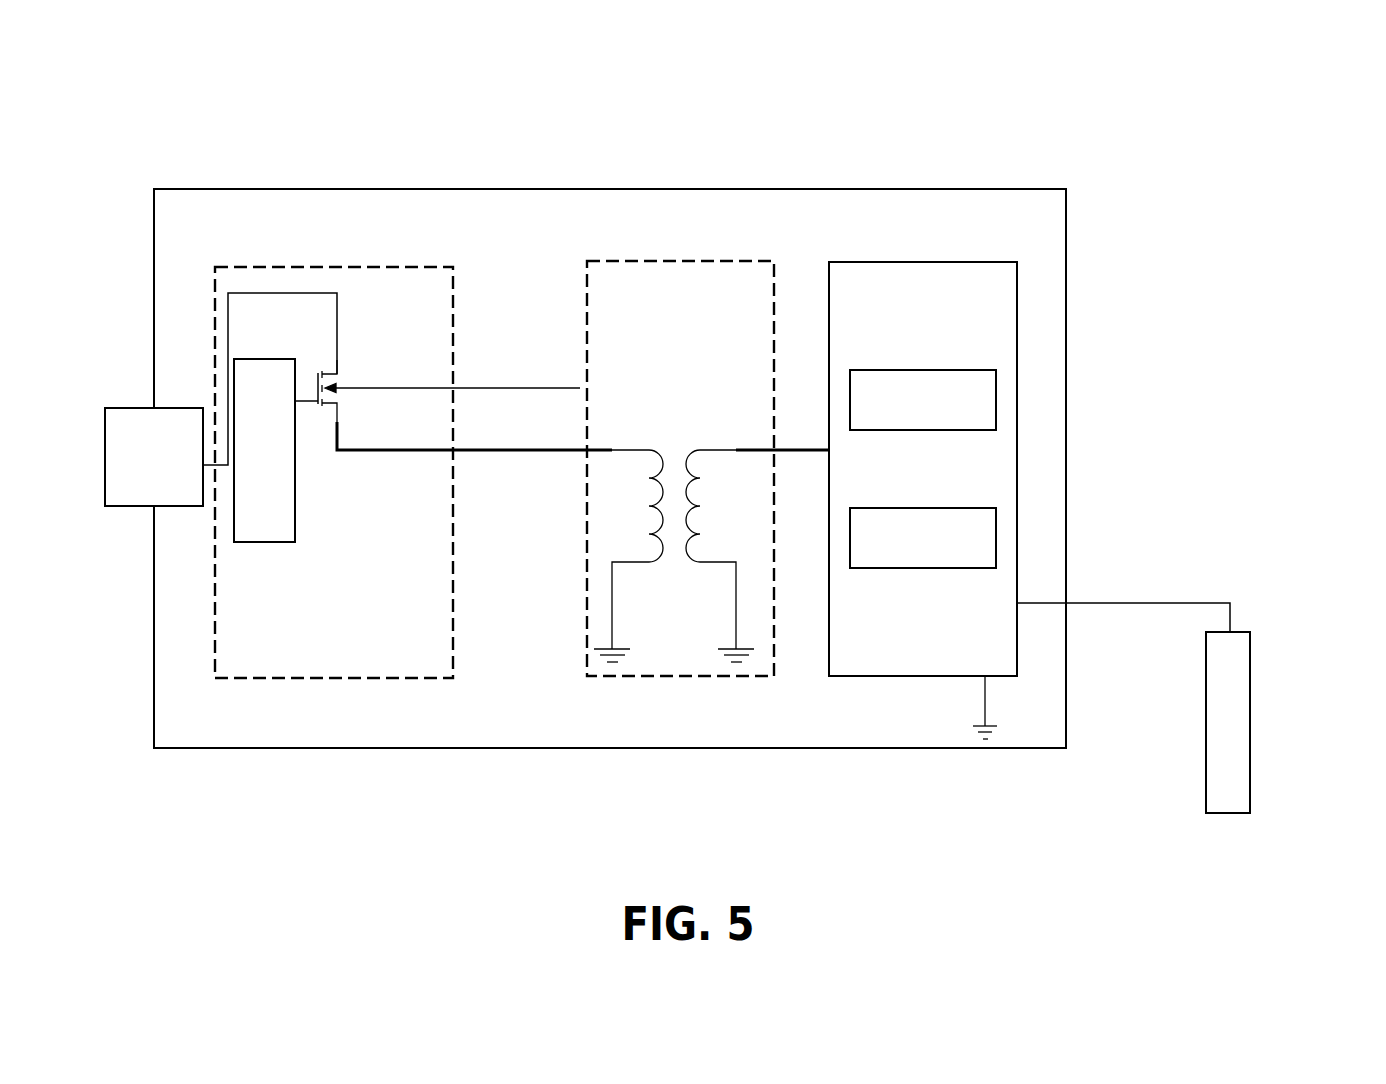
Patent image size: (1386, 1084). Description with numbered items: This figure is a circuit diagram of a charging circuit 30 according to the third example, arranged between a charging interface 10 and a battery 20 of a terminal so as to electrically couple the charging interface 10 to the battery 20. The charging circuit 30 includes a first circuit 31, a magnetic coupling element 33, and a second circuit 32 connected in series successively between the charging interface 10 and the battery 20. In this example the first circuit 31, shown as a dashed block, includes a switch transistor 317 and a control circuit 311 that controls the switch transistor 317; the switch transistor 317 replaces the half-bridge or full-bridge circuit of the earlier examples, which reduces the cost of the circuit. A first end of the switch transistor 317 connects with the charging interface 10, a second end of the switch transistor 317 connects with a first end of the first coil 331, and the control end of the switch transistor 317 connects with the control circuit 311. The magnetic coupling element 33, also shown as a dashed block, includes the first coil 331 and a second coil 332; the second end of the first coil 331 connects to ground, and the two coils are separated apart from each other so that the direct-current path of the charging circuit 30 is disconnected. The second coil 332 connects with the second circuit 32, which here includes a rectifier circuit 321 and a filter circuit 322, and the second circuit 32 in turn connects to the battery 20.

The charging interface 10 is at (130, 408).
The battery 20 is at (1247, 632).
The charging circuit 30 is at (1067, 188).
The first circuit 31 is at (350, 266).
The control circuit 311 is at (270, 543).
The switch transistor 317 is at (336, 357).
The second circuit 32 is at (983, 262).
The rectifier circuit 321 is at (996, 398).
The filter circuit 322 is at (996, 541).
The magnetic coupling element 33 is at (673, 261).
The first coil 331 is at (639, 449).
The second coil 332 is at (716, 449).